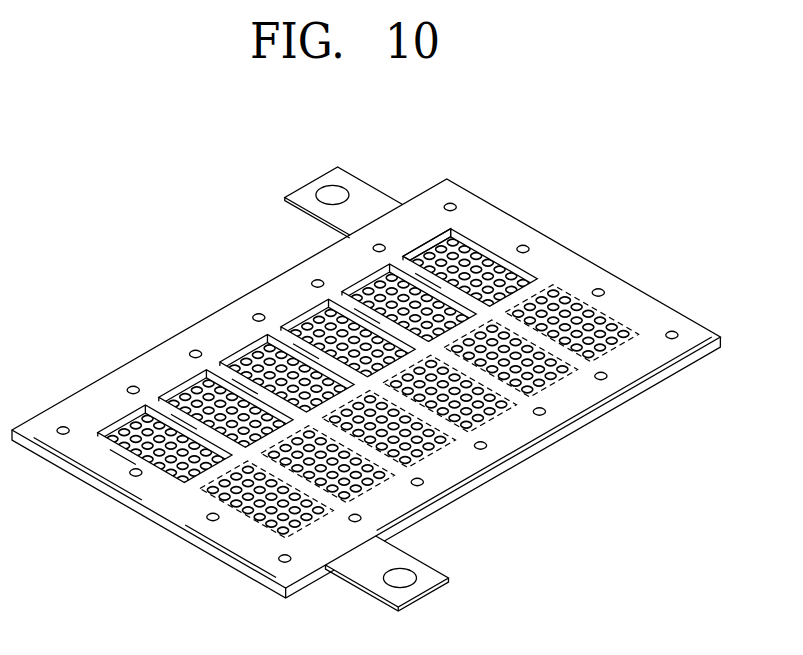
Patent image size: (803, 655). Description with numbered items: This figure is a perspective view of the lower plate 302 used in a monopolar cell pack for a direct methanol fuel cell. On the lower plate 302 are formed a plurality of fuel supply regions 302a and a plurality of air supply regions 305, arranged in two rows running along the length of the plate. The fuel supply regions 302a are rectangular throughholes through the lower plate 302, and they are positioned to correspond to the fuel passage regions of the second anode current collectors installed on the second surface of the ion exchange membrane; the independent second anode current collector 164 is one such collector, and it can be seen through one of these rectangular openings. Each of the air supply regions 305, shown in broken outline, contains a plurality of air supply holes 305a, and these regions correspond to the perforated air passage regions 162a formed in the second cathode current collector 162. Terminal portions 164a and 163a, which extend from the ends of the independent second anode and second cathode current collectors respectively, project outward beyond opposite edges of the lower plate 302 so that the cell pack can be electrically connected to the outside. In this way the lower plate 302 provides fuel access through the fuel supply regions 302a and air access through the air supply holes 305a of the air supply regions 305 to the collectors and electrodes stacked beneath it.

The lower plate 302 is at (449, 186).
The fuel supply region 302a is at (530, 247).
The second cathode current collector 162 is at (278, 350).
The air passage region 162a is at (497, 272).
The second anode current collector 164 is at (462, 243).
The terminal portion 164a is at (370, 196).
The terminal portion 163a is at (430, 577).
The air supply region 305 is at (612, 312).
The air supply hole 305a is at (623, 337).